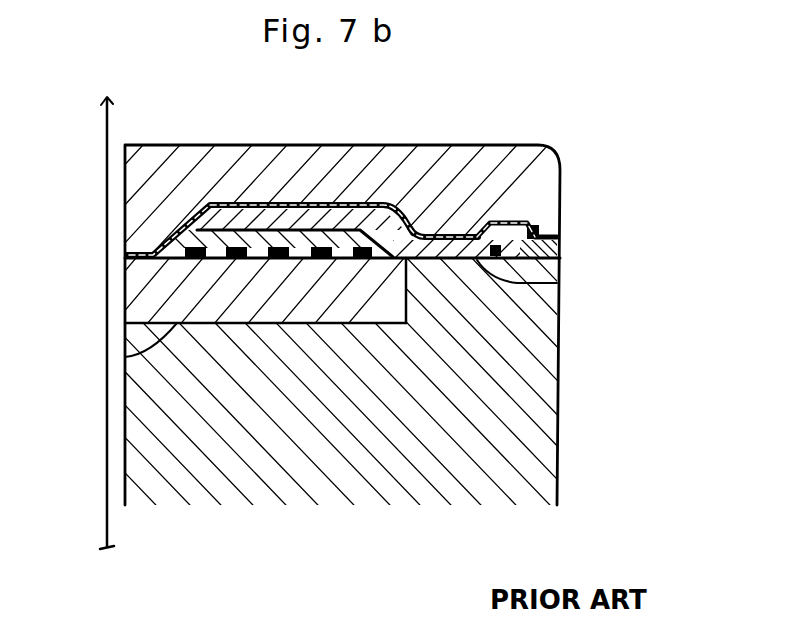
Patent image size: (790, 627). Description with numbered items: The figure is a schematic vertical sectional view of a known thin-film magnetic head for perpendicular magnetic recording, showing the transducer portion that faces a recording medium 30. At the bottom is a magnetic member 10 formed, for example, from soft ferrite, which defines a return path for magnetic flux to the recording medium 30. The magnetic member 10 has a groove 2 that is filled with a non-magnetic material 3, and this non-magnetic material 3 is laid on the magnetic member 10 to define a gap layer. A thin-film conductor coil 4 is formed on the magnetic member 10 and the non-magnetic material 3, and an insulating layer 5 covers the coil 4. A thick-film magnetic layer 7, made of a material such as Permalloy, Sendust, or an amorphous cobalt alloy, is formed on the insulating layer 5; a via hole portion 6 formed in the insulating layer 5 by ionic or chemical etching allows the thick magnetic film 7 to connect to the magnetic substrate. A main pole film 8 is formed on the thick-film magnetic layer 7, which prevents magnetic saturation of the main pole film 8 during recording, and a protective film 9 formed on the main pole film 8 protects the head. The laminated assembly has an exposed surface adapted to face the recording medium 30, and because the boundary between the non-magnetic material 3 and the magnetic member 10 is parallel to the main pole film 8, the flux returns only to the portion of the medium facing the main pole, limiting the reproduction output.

The groove 2 is at (127, 355).
The non-magnetic material 3 is at (125, 292).
The thin-film conductor coil 4 is at (369, 226).
The insulating layer 5 is at (315, 204).
The via hole portion 6 is at (552, 285).
The thick-film magnetic layer 7 is at (512, 222).
The main pole film 8 is at (440, 232).
The protective film 9 is at (545, 198).
The magnetic member 10 is at (125, 417).
The recording medium 30 is at (107, 148).